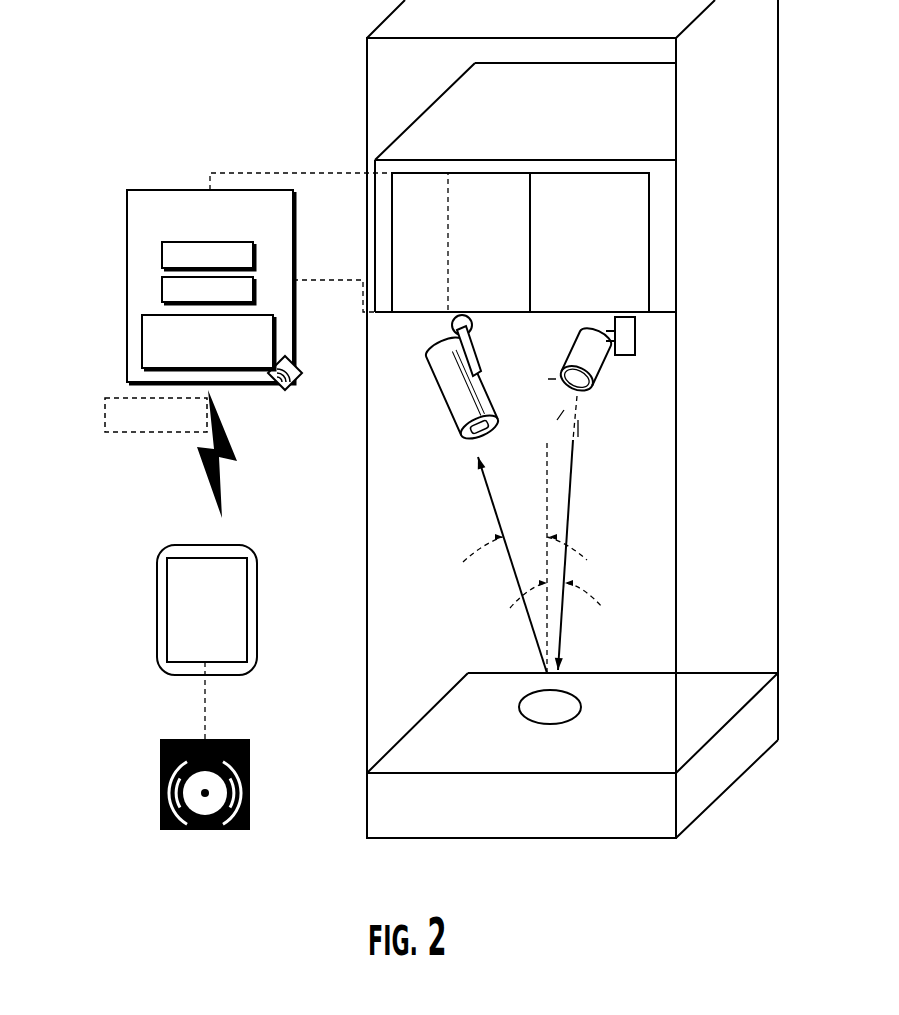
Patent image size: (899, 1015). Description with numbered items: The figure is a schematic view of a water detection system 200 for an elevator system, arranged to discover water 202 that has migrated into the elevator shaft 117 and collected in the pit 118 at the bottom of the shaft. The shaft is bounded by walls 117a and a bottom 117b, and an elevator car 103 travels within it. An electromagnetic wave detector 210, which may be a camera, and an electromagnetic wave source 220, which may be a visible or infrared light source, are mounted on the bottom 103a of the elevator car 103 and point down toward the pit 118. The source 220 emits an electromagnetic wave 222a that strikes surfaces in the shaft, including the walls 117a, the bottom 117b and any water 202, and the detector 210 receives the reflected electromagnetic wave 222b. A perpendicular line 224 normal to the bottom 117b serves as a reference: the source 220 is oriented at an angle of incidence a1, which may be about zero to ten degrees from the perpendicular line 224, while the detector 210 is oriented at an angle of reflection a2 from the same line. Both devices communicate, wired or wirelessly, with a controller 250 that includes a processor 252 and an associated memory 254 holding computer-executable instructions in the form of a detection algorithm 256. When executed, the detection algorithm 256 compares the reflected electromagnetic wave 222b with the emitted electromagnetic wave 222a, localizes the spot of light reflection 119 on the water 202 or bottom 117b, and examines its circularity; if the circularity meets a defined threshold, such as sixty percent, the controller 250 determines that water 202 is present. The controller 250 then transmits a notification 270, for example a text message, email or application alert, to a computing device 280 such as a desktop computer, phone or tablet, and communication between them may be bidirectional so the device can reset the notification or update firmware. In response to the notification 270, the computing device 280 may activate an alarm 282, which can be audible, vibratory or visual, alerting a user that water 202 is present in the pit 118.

The water detection system 200 is at (136, 85).
The elevator car 103 is at (670, 230).
The bottom of the elevator car 103a is at (657, 315).
The elevator shaft 117 is at (418, 577).
The walls of the elevator shaft 117a is at (676, 495).
The bottom of the elevator shaft 117b is at (603, 838).
The pit 118 is at (404, 686).
The spot of light reflection 119 is at (555, 725).
The water 202 is at (636, 753).
The electromagnetic wave detector 210 is at (444, 407).
The electromagnetic wave source 220 is at (593, 385).
The electromagnetic wave 222a is at (568, 515).
The reflected electromagnetic wave 222b is at (490, 495).
The perpendicular line 224 is at (547, 455).
The angle of incidence a1 is at (564, 606).
The angle of reflection a2 is at (470, 548).
The controller 250 is at (127, 217).
The processor 252 is at (162, 255).
The memory 254 is at (162, 290).
The detection algorithm 256 is at (142, 337).
The notification 270 is at (105, 412).
The computing device 280 is at (157, 620).
The alarm 282 is at (160, 760).